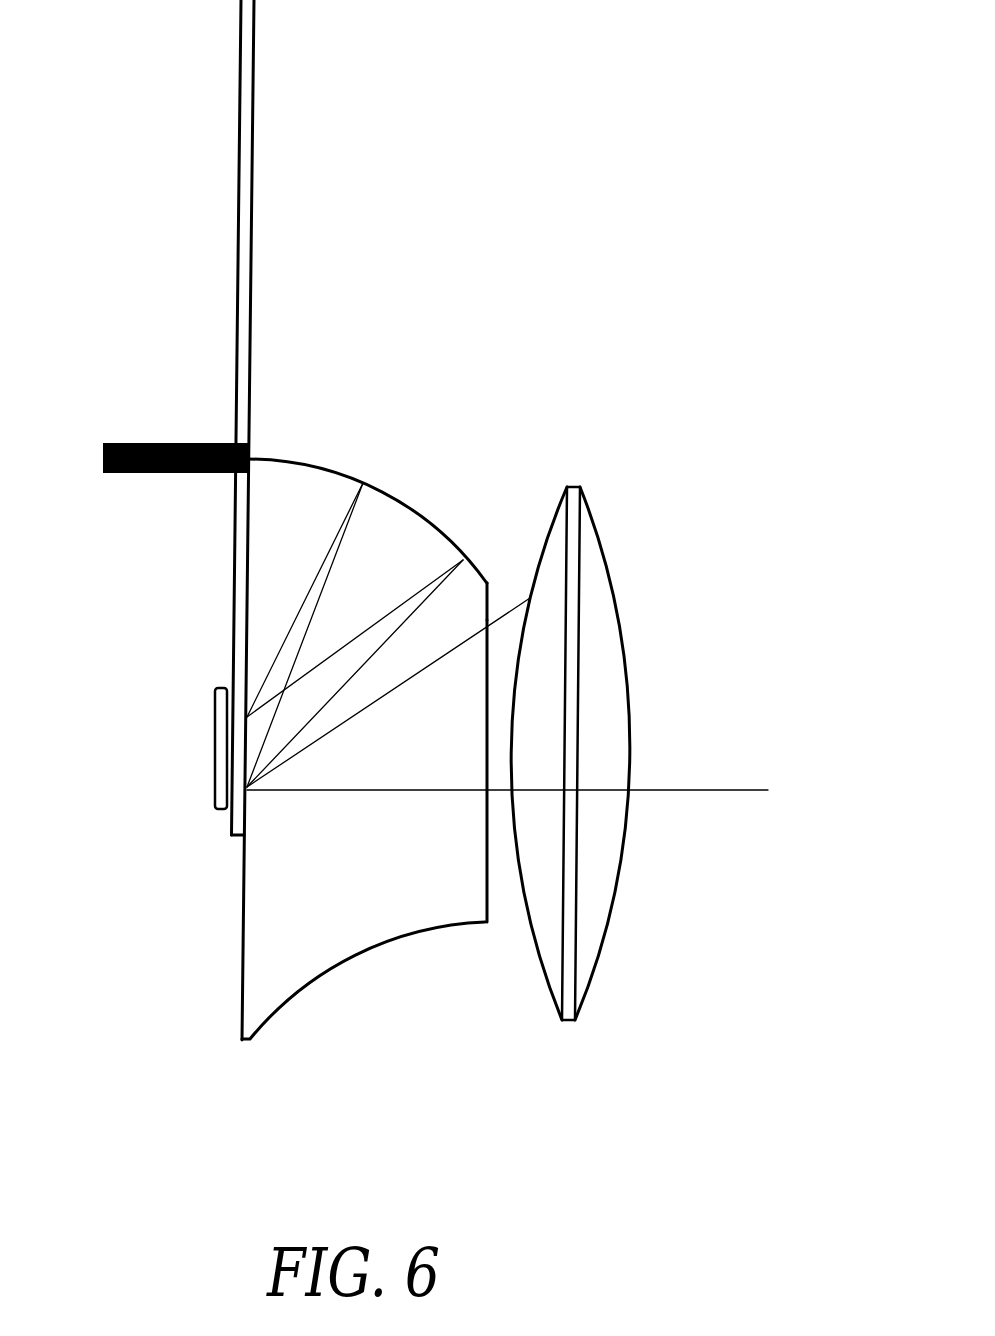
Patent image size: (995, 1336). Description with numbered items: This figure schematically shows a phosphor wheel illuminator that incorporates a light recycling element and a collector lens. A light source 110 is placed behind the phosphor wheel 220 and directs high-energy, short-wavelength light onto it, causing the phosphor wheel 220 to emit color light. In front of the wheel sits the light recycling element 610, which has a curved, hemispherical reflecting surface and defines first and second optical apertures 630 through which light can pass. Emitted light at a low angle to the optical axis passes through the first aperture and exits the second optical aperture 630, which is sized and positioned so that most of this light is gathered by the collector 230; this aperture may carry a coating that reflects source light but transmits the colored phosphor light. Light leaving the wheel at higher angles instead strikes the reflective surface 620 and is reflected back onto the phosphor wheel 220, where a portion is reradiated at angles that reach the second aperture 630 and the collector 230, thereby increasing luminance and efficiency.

The light source 110 is at (196, 745).
The phosphor wheel 220 is at (280, 250).
The collector 230 is at (656, 526).
The light recycling element 610 is at (464, 992).
The reflective surface 620 is at (370, 474).
The second optical aperture 630 is at (489, 606).